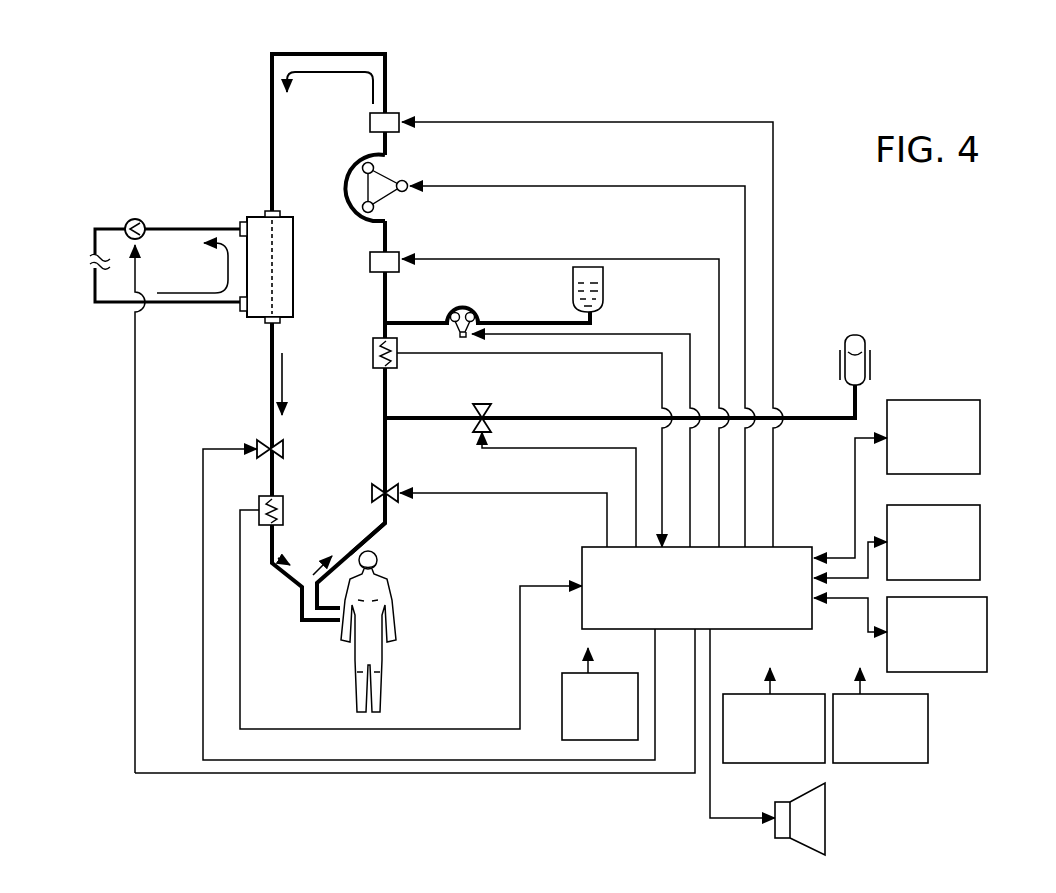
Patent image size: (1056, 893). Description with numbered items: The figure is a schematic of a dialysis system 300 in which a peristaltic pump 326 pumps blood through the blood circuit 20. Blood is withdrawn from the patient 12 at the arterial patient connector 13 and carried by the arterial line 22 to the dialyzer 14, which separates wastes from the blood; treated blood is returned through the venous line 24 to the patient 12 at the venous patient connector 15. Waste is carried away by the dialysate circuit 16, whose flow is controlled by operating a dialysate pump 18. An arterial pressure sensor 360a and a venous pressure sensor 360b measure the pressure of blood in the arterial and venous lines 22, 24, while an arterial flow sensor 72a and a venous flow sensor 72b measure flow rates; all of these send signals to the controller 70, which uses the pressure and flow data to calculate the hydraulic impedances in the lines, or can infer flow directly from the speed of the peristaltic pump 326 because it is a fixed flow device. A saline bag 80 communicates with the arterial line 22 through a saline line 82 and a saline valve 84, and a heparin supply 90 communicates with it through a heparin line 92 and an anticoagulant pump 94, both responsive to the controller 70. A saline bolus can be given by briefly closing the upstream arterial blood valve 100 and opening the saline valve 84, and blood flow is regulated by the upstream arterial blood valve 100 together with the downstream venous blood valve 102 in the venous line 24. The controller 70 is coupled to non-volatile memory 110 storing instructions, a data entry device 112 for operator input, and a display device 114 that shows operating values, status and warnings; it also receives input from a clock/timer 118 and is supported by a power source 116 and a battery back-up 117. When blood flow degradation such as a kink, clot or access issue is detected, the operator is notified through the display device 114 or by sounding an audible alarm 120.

The dialysis system 300 is at (152, 108).
The blood circuit 20 is at (310, 52).
The arterial line 22 is at (385, 540).
The venous line 24 is at (270, 352).
The arterial patient connector 13 is at (340, 602).
The venous patient connector 15 is at (340, 632).
The patient 12 is at (378, 676).
The dialyzer 14 is at (255, 215).
The dialysate circuit 16 is at (205, 226).
The dialysate pump 18 is at (133, 218).
The venous pressure sensor 360b is at (370, 122).
The peristaltic pump 326 is at (380, 168).
The arterial pressure sensor 360a is at (370, 262).
The heparin line 92 is at (600, 323).
The anticoagulant pump 94 is at (452, 327).
The heparin supply 90 is at (572, 290).
The arterial flow sensor 72a is at (373, 354).
The saline line 82 is at (570, 417).
The saline valve 84 is at (478, 405).
The upstream arterial blood valve 100 is at (373, 493).
The downstream venous blood valve 102 is at (262, 440).
The venous flow sensor 72b is at (260, 514).
The saline bag 80 is at (862, 338).
The controller 70 is at (697, 588).
The display device 114 is at (938, 400).
The data entry device 112 is at (980, 515).
The memory 110 is at (987, 613).
The clock/timer 118 is at (612, 671).
The battery back-up 117 is at (796, 692).
The power source 116 is at (928, 706).
The audible alarm 120 is at (826, 810).